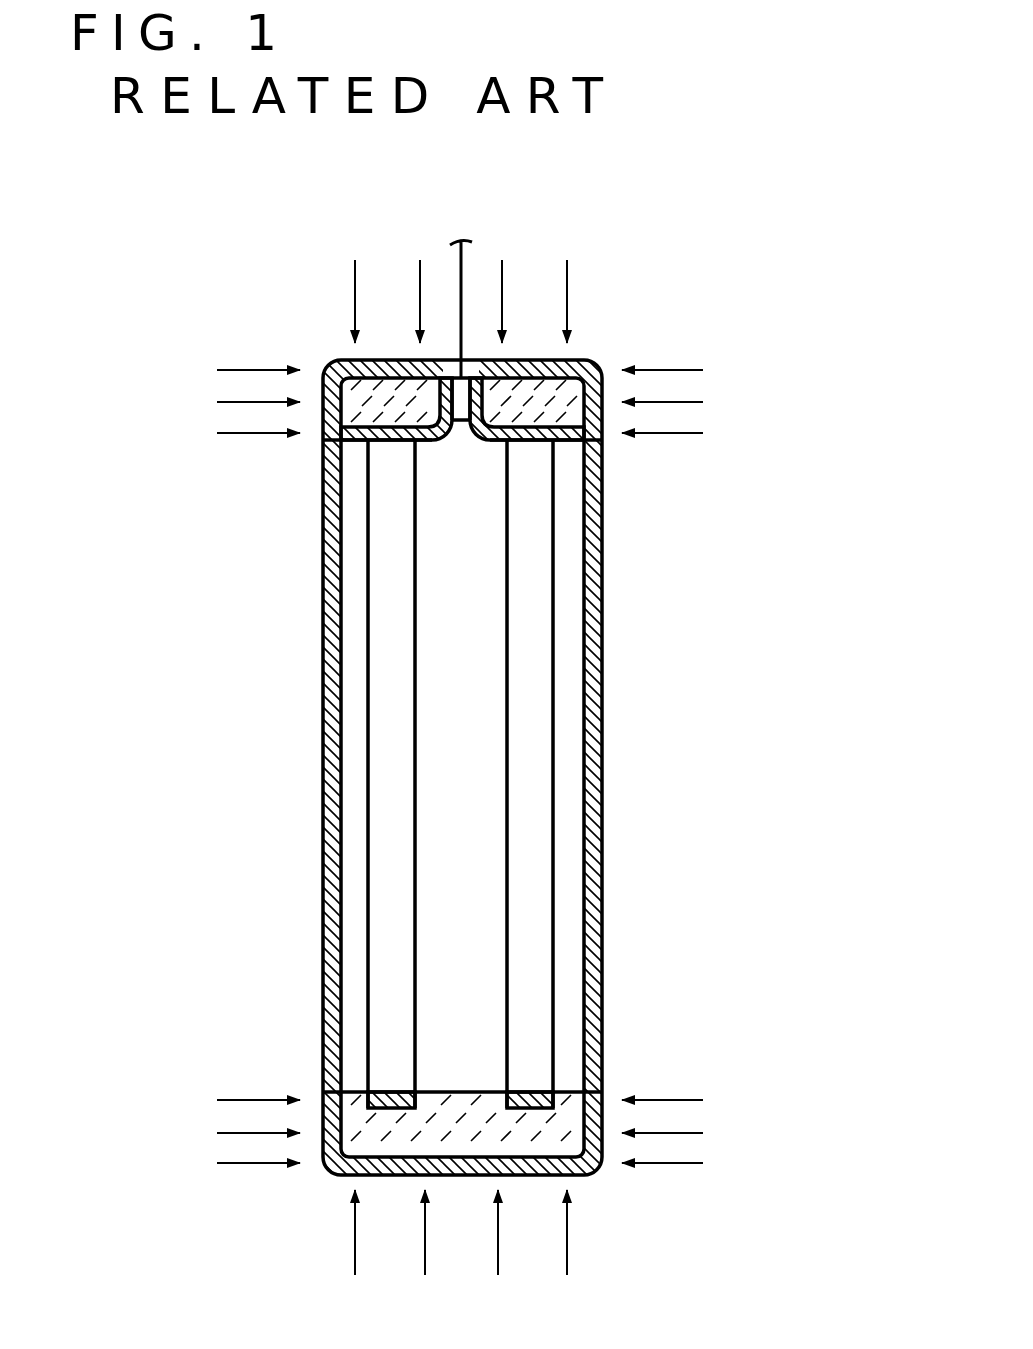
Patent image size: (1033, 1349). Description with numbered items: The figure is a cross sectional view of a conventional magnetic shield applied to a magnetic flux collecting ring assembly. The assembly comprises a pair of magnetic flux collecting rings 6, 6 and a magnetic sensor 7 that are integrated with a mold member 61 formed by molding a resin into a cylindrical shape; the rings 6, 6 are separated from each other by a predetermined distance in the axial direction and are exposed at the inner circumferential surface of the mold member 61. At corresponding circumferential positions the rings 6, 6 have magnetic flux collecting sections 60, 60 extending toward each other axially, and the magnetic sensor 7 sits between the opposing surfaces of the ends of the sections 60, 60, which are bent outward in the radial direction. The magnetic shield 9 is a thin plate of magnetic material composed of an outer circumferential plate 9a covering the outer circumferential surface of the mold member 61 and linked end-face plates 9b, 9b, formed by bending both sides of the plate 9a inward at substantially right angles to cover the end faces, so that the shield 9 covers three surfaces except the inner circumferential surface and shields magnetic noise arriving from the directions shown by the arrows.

The magnetic shield 9 is at (609, 728).
The outer circumferential plate 9a is at (567, 362).
The end-face plate 9b is at (602, 395).
The magnetic flux collecting section 60 is at (417, 389).
The magnetic flux collecting ring 6 is at (388, 444).
The magnetic sensor 7 is at (461, 425).
The mold member 61 is at (470, 1090).